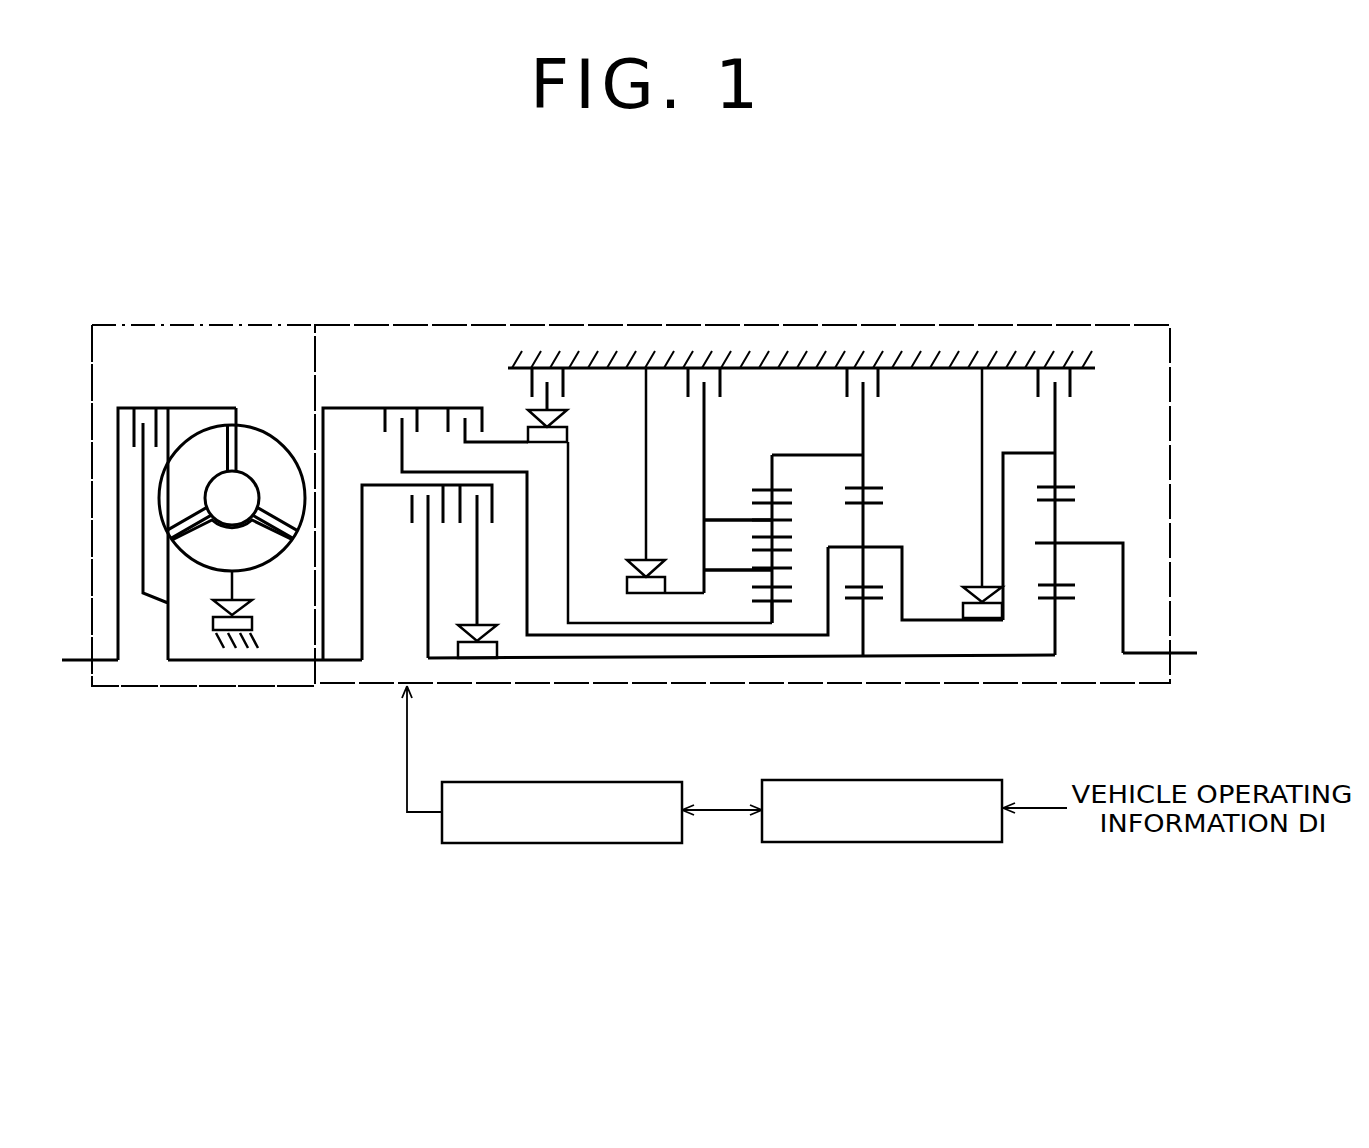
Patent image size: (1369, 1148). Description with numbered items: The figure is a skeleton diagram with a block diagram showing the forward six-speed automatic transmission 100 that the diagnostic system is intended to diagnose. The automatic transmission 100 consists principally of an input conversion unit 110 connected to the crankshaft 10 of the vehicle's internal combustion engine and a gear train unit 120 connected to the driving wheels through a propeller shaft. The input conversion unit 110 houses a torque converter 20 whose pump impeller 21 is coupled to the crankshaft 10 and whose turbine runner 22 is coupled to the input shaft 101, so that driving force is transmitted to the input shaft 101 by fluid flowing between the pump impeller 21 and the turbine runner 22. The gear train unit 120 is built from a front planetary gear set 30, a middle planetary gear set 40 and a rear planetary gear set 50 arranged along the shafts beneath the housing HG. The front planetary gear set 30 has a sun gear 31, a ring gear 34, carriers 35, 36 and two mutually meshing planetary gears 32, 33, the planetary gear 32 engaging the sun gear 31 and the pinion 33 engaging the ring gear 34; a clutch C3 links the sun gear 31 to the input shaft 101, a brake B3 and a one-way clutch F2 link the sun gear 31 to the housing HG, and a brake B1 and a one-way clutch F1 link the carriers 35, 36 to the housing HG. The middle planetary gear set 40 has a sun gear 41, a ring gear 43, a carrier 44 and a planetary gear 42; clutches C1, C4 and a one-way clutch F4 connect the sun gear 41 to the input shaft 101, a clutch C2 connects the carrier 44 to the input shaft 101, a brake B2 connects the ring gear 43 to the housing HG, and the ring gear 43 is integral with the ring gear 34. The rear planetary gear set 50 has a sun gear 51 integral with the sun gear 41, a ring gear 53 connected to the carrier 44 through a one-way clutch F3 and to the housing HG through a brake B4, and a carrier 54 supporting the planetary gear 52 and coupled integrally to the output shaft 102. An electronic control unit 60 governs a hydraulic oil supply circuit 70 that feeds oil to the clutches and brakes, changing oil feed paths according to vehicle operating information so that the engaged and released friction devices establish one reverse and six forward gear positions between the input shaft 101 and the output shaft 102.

The automatic transmission 100 is at (196, 781).
The crankshaft 10 is at (70, 662).
The input shaft 101 is at (292, 662).
The output shaft 102 is at (1147, 653).
The input conversion unit 110 is at (220, 323).
The gear train unit 120 is at (757, 322).
The torque converter 20 is at (211, 497).
The pump impeller 21 is at (252, 437).
The turbine runner 22 is at (188, 435).
The front planetary gear set 30 is at (760, 591).
The sun gear 31 is at (783, 600).
The planetary gear 32 is at (762, 587).
The planetary gear 33 is at (790, 533).
The ring gear 34 is at (760, 488).
The carrier 35 is at (712, 570).
The carrier 36 is at (712, 520).
The middle planetary gear set 40 is at (915, 588).
The sun gear 41 is at (853, 600).
The planetary gear 42 is at (877, 587).
The ring gear 43 is at (870, 488).
The carrier 44 is at (895, 540).
The rear planetary gear set 50 is at (1072, 536).
The sun gear 51 is at (1063, 600).
The planetary gear 52 is at (1063, 500).
The ring gear 53 is at (1053, 483).
The carrier 54 is at (1087, 547).
The electronic control unit 60 is at (822, 842).
The hydraulic oil supply circuit 70 is at (568, 843).
The brake B1 is at (677, 390).
The brake B2 is at (849, 390).
The brake B3 is at (530, 390).
The brake B4 is at (1042, 390).
The clutch C1 is at (492, 500).
The clutch C2 is at (386, 412).
The clutch C3 is at (450, 412).
The clutch C4 is at (412, 497).
The one-way clutch F1 is at (627, 585).
The one-way clutch F2 is at (565, 435).
The one-way clutch F3 is at (978, 610).
The one-way clutch F4 is at (480, 658).
The housing HG is at (935, 352).